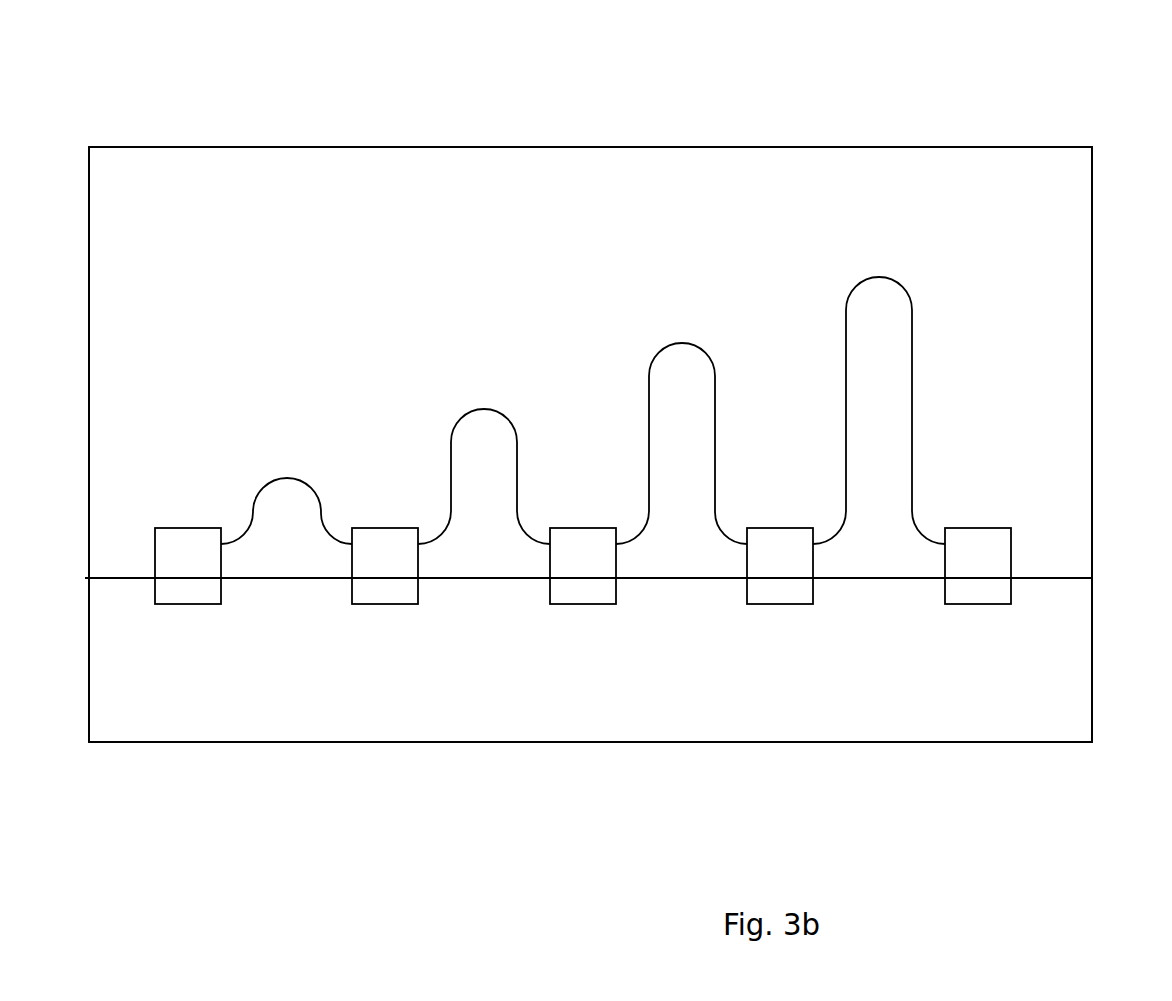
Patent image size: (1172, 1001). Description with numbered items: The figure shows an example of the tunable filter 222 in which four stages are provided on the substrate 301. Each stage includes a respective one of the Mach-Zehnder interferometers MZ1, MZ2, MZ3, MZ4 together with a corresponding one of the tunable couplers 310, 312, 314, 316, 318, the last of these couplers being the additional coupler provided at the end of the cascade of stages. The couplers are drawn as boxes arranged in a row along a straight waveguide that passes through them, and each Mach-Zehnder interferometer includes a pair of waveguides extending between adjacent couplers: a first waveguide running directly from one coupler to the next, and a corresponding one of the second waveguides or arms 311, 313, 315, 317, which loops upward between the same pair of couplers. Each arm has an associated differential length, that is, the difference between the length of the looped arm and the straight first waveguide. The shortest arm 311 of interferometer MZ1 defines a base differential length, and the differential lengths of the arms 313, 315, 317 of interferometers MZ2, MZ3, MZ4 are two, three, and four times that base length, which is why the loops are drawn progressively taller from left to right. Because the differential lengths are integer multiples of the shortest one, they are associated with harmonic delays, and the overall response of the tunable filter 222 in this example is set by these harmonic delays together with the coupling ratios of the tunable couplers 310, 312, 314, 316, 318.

The tunable filter 222 is at (303, 113).
The substrate 301 is at (1092, 715).
The tunable coupler 310 is at (188, 604).
The arm 311 is at (287, 478).
The tunable coupler 312 is at (385, 604).
The arm 313 is at (455, 418).
The tunable coupler 314 is at (583, 604).
The arm 315 is at (674, 344).
The tunable coupler 316 is at (780, 604).
The arm 317 is at (855, 288).
The tunable coupler 318 is at (978, 603).
The Mach-Zehnder interferometer MZ1 is at (270, 345).
The Mach-Zehnder interferometer MZ2 is at (467, 322).
The Mach-Zehnder interferometer MZ3 is at (665, 283).
The Mach-Zehnder interferometer MZ4 is at (878, 245).